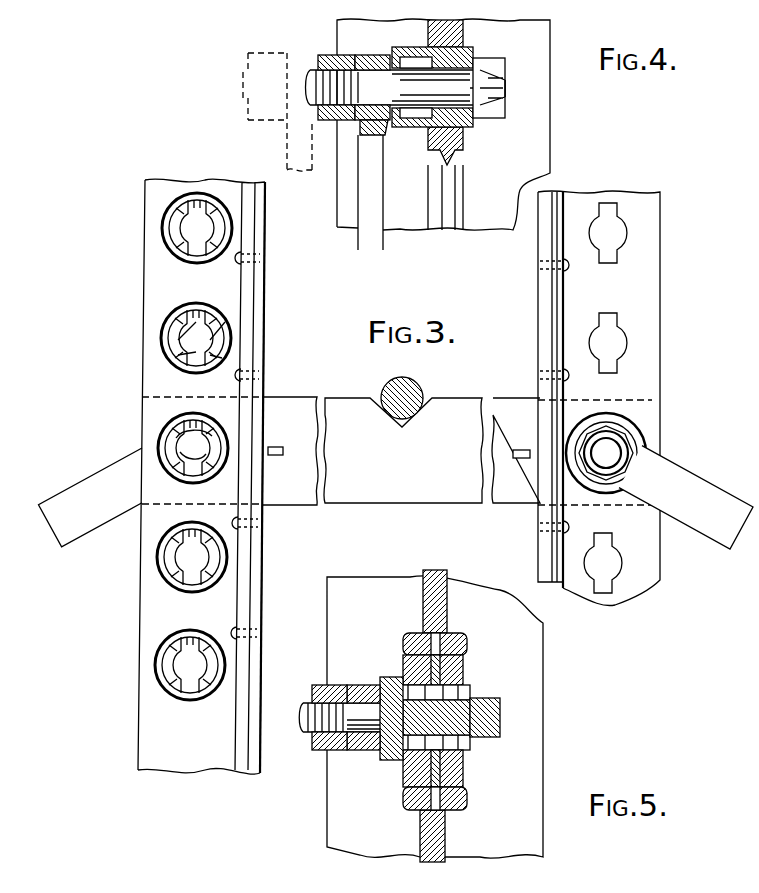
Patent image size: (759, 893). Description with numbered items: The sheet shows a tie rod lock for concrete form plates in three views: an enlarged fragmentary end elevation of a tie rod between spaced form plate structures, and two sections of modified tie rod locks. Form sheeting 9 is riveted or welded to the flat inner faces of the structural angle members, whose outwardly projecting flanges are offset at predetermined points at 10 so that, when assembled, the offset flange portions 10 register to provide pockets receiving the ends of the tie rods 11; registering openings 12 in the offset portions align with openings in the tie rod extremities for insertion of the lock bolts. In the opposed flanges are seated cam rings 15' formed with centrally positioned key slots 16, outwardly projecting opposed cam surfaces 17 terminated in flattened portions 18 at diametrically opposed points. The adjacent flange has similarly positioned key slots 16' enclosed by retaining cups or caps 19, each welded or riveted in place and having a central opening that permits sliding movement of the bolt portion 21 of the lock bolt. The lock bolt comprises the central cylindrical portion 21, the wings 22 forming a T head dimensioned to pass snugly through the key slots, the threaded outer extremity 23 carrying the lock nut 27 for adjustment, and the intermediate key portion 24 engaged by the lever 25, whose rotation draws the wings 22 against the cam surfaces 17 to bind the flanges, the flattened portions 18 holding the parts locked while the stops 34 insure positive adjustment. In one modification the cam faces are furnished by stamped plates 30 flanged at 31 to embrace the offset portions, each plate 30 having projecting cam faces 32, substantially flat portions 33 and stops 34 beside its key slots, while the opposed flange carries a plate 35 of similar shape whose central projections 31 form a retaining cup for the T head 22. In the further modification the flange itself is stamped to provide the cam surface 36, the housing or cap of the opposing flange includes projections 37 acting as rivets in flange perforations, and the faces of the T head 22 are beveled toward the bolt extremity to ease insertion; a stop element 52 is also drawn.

In FIG. 3, the form sheeting 9 is at (262, 592).
In FIG. 4, the offset flange portions 10 is at (462, 54).
In FIG. 5, the offset flange portions 10 is at (470, 668).
In FIG. 4, the tie rods 11 is at (465, 140).
In FIG. 3, the tie rods 11 is at (390, 486).
In FIG. 5, the tie rods 11 is at (465, 768).
In FIG. 5, the registering openings 12 is at (405, 683).
In FIG. 3, the cam rings 15' is at (167, 228).
In FIG. 3, the key slots 16 is at (164, 427).
In FIG. 3, the key slots 16' is at (405, 398).
In FIG. 3, the cam surfaces 17 is at (183, 342).
In FIG. 3, the flattened portions 18 is at (229, 324).
In FIG. 3, the retaining cups or caps 19 is at (636, 431).
In FIG. 5, the bolt portion 21 is at (381, 748).
In FIG. 4, the wings 22 is at (492, 118).
In FIG. 3, the wings 22 is at (205, 447).
In FIG. 3, the threaded outer extremity 23 is at (612, 455).
In FIG. 5, the key portion 24 is at (360, 760).
In FIG. 4, the levers 25 is at (370, 186).
In FIG. 3, the levers 25 is at (104, 480).
In FIG. 3, the lock nut 27 is at (646, 446).
In FIG. 5, the lock nut 27 is at (320, 683).
In FIG. 5, the plates 30 is at (470, 655).
In FIG. 5, the flanges 31 is at (450, 630).
In FIG. 5, the cam faces 32 is at (480, 742).
In FIG. 5, the flat portions 33 is at (490, 717).
In FIG. 5, the stops 34 is at (480, 702).
In FIG. 5, the plate 35 is at (462, 790).
In FIG. 4, the cam surface 36 is at (485, 84).
In FIG. 4, the projections 37 is at (428, 122).
In FIG. 3, the stop tab 52 is at (275, 455).